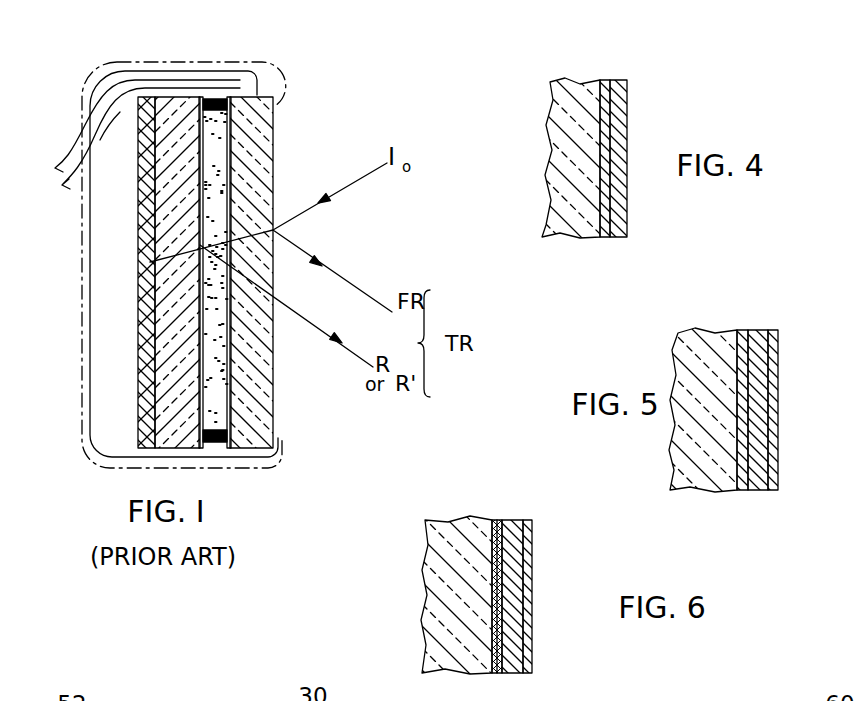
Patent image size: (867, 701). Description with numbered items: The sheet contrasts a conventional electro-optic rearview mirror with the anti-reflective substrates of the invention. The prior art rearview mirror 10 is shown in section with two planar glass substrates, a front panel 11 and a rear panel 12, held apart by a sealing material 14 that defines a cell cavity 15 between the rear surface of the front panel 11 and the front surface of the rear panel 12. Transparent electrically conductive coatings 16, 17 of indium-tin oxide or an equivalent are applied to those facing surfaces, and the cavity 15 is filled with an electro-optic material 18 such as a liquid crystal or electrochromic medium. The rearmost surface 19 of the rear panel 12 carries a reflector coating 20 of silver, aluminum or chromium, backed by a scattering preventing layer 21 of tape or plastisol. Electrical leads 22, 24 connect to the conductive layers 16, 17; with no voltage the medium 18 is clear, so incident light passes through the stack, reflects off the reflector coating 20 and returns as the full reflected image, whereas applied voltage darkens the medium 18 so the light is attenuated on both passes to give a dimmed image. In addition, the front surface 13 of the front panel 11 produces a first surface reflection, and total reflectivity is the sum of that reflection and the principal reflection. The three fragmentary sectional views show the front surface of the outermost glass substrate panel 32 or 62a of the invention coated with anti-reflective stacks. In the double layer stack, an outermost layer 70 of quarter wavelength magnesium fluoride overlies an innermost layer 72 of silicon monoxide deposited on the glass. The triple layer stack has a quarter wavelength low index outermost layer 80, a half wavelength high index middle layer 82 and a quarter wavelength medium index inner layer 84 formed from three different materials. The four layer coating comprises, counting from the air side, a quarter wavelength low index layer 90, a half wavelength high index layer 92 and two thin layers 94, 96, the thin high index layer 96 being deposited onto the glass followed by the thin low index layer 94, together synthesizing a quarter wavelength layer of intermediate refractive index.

In FIG. 1, the rearview mirror 10 is at (320, 62).
In FIG. 1, the front panel 11 is at (267, 143).
In FIG. 1, the rear panel 12 is at (165, 187).
In FIG. 1, the front surface 13 is at (270, 406).
In FIG. 1, the sealing material 14 is at (218, 98).
In FIG. 1, the cell cavity 15 is at (215, 152).
In FIG. 1, the transparent electrically conductive coating 16 is at (233, 360).
In FIG. 1, the transparent electrically conductive coating 17 is at (193, 327).
In FIG. 1, the electro-optic material 18 is at (206, 192).
In FIG. 1, the rearmost surface 19 is at (148, 375).
In FIG. 1, the reflector coating 20 is at (145, 263).
In FIG. 1, the scattering preventing layer 21 is at (150, 230).
In FIG. 1, the electrical lead 22 is at (100, 110).
In FIG. 1, the electrical lead 24 is at (100, 152).
In FIG. 4, the glass substrate panel 32 is at (601, 184).
In FIG. 5, the glass substrate panel 32 is at (711, 439).
In FIG. 6, the glass substrate panel 32 is at (466, 575).
In FIG. 4, the glass substrate panel 62a is at (577, 90).
In FIG. 5, the glass substrate panel 62a is at (700, 340).
In FIG. 6, the glass substrate panel 62a is at (443, 532).
In FIG. 4, the outermost layer 70 is at (615, 102).
In FIG. 4, the innermost layer 72 is at (605, 143).
In FIG. 5, the outermost layer 80 is at (773, 352).
In FIG. 5, the middle layer 82 is at (760, 363).
In FIG. 5, the inner layer 84 is at (745, 425).
In FIG. 6, the low index layer 90 is at (532, 548).
In FIG. 6, the high index layer 92 is at (512, 570).
In FIG. 6, the thin low index layer 94 is at (517, 603).
In FIG. 6, the thin high index layer 96 is at (532, 668).